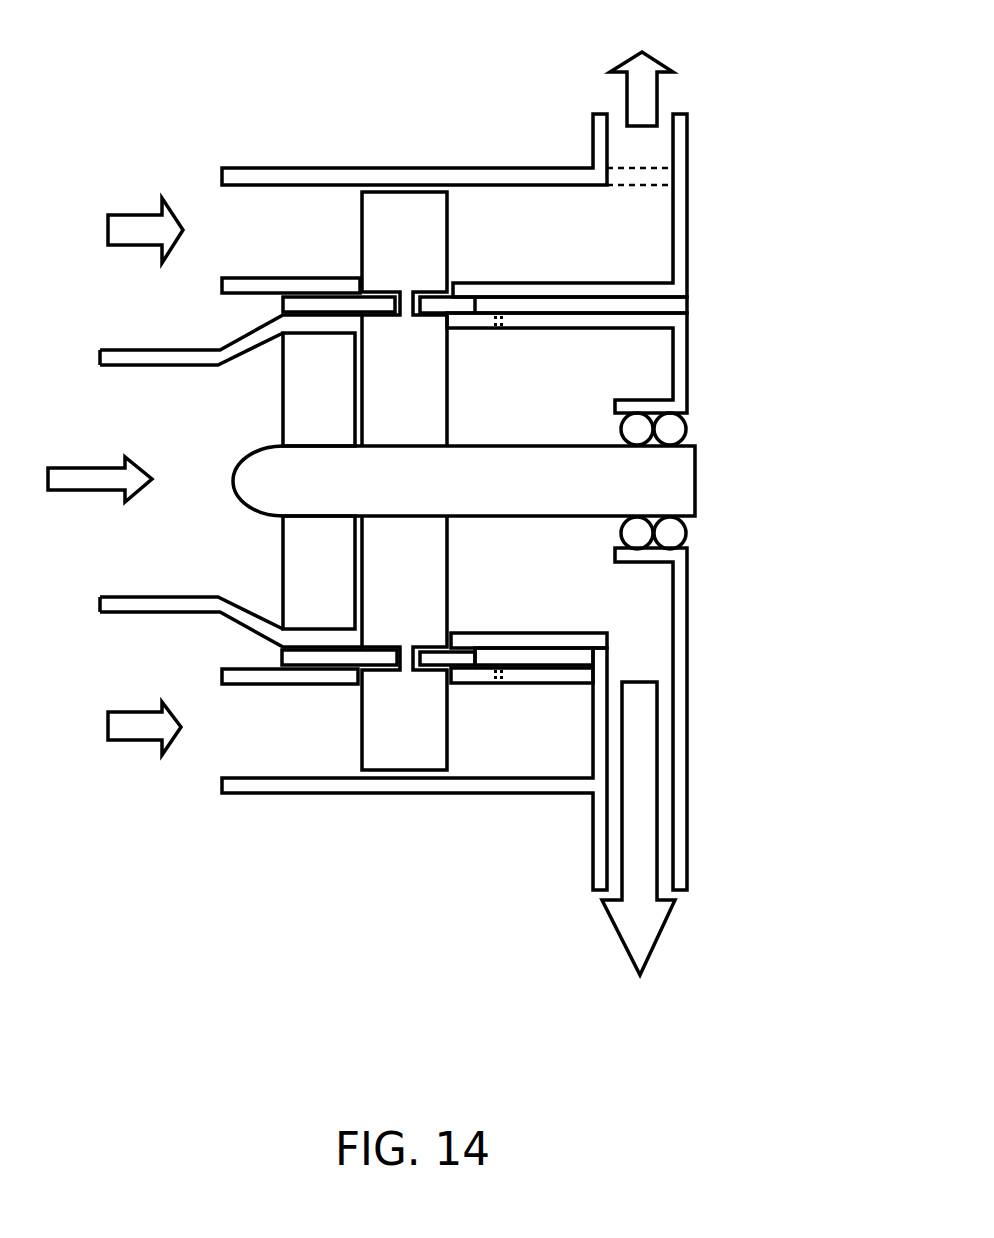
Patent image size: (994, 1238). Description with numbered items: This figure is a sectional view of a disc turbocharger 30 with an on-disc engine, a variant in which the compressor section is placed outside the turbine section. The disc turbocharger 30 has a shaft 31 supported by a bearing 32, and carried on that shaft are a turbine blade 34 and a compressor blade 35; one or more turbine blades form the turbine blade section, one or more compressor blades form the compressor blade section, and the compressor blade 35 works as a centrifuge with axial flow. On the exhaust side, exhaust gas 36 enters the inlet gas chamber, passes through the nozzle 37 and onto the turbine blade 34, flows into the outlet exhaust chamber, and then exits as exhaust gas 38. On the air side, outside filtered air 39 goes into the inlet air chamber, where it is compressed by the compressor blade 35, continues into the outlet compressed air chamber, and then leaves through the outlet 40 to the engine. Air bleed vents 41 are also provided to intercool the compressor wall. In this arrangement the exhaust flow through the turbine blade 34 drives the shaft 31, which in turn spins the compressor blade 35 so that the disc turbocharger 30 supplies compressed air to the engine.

The disc turbocharger 30 is at (790, 174).
The shaft 31 is at (702, 466).
The bearing 32 is at (684, 530).
The turbine blade 34 is at (360, 360).
The compressor blade 35 is at (382, 188).
The exhaust gas 36 is at (88, 468).
The nozzle 37 is at (283, 563).
The exhaust gas 38 is at (645, 965).
The outside filtered air 39 is at (140, 210).
The outlet 40 is at (656, 56).
The air bleed vents 41 is at (498, 329).